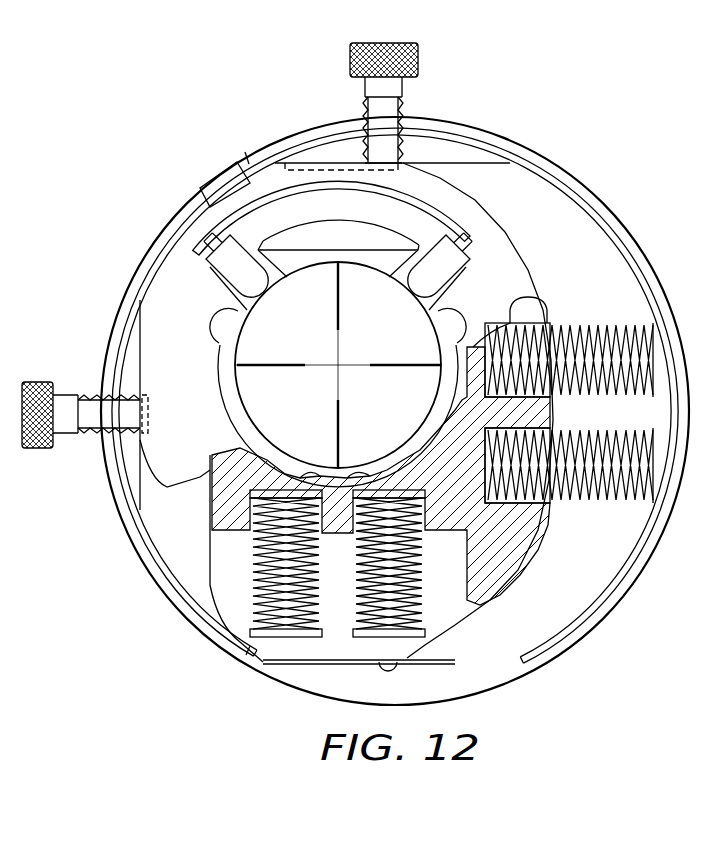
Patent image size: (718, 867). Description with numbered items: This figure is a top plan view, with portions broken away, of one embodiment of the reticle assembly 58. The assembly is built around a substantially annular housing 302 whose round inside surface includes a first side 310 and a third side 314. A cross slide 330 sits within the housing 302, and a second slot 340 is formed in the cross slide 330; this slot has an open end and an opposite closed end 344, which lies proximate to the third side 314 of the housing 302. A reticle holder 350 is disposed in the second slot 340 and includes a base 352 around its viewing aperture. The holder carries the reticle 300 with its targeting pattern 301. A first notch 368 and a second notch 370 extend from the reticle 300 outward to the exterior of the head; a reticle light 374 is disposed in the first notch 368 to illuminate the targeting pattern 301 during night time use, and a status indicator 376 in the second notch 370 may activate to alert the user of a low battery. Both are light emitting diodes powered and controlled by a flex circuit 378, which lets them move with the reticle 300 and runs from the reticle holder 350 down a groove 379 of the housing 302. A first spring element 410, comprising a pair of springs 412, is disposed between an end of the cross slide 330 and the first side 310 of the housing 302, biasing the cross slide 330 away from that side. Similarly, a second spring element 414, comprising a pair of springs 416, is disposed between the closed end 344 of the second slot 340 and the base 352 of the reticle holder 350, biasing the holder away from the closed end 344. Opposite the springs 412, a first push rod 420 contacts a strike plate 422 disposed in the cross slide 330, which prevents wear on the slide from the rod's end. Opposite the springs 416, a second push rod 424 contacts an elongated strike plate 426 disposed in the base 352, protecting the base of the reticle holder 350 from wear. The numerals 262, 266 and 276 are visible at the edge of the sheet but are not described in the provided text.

The reticle assembly 58 is at (197, 677).
The support member 262 is at (1, 562).
The support member 266 is at (11, 535).
The support member 276 is at (9, 602).
The reticle 300 is at (338, 365).
The targeting pattern 301 is at (345, 418).
The housing 302 is at (133, 567).
The first side 310 is at (622, 560).
The third side 314 is at (402, 668).
The cross slide 330 is at (450, 640).
The second slot 340 is at (478, 608).
The closed end 344 is at (283, 668).
The reticle holder 350 is at (317, 406).
The base 352 is at (457, 478).
The first notch 368 is at (428, 300).
The second notch 370 is at (248, 302).
The reticle light 374 is at (456, 238).
The status indicator 376 is at (210, 266).
The flex circuit 378 is at (228, 178).
The groove 379 is at (248, 157).
The first spring element 410 is at (569, 401).
The springs 412 is at (575, 398).
The second spring element 414 is at (238, 593).
The springs 416 is at (252, 528).
The first push rod 420 is at (33, 380).
The strike plate 422 is at (148, 393).
The second push rod 424 is at (419, 62).
The elongated strike plate 426 is at (305, 162).